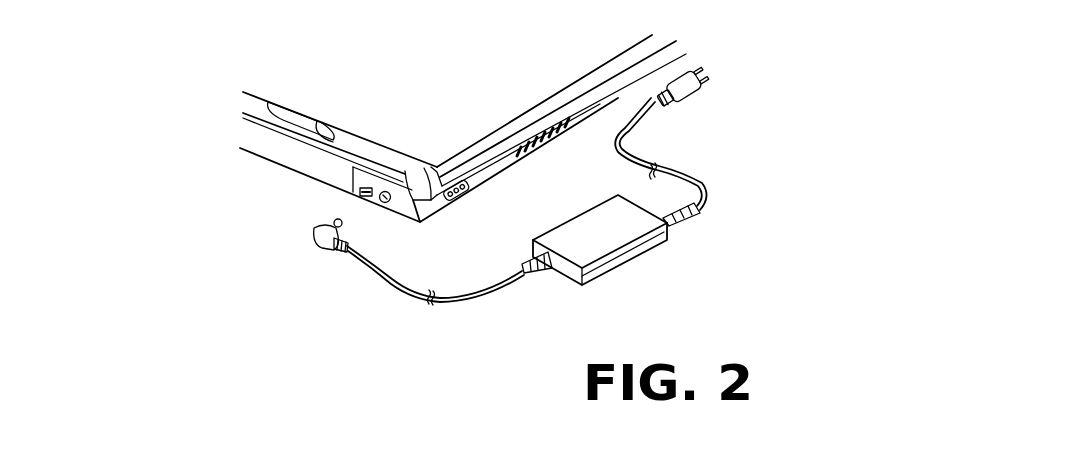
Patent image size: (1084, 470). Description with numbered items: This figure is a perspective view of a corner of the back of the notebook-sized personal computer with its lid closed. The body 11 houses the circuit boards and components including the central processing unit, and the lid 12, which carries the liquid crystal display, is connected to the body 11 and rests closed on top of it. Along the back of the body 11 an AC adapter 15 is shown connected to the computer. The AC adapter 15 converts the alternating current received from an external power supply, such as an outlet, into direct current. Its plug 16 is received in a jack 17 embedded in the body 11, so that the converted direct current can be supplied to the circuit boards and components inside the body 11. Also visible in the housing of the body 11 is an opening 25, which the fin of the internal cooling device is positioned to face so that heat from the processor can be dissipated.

The body 11 is at (440, 207).
The lid 12 is at (460, 142).
The AC adapter 15 is at (640, 257).
The plug 16 is at (316, 227).
The jack 17 is at (383, 204).
The opening 25 is at (561, 136).